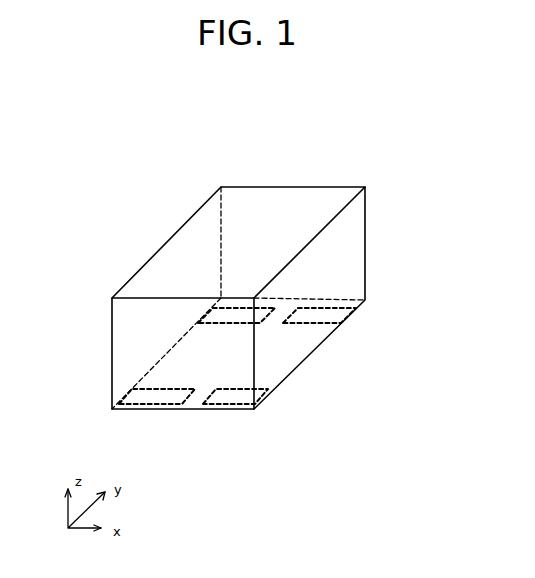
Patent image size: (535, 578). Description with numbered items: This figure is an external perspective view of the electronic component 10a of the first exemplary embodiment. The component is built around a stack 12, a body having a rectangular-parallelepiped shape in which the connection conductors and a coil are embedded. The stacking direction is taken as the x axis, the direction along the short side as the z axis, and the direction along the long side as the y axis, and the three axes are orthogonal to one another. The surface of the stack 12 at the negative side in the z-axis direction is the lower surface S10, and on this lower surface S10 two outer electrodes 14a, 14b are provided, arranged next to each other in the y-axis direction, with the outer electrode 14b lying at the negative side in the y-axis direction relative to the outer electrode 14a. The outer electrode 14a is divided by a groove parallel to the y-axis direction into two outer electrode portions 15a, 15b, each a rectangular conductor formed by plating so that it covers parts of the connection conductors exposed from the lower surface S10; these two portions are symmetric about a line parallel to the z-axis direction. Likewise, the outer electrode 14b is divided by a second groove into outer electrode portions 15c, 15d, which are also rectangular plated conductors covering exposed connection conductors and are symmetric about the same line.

The electronic component 10a is at (205, 145).
The stack 12 is at (367, 187).
The lower surface S10 is at (268, 335).
The outer electrode 14a is at (427, 414).
The outer electrode 14b is at (243, 456).
The outer electrode portion 15a is at (240, 318).
The outer electrode portion 15b is at (322, 312).
The outer electrode portion 15c is at (167, 405).
The outer electrode portion 15d is at (225, 405).